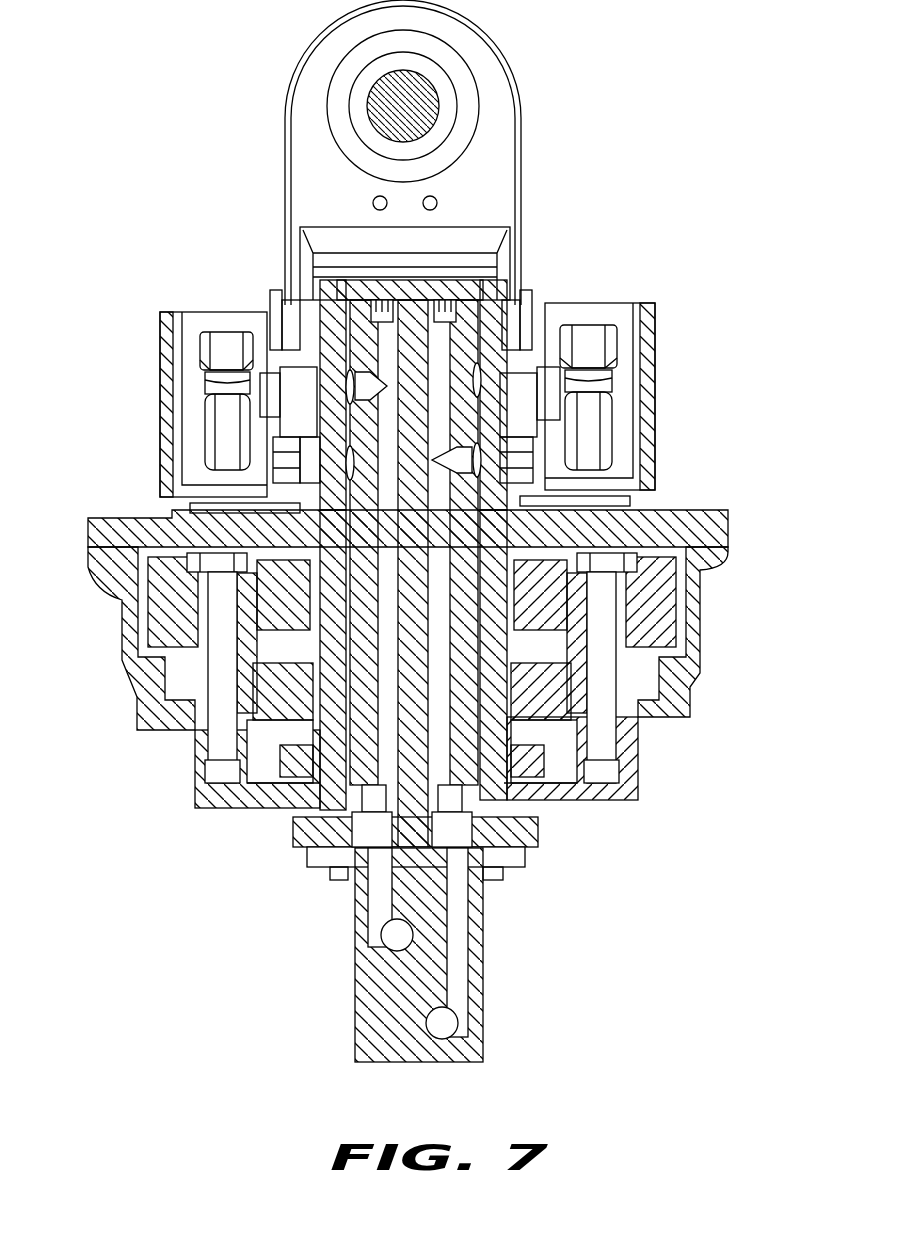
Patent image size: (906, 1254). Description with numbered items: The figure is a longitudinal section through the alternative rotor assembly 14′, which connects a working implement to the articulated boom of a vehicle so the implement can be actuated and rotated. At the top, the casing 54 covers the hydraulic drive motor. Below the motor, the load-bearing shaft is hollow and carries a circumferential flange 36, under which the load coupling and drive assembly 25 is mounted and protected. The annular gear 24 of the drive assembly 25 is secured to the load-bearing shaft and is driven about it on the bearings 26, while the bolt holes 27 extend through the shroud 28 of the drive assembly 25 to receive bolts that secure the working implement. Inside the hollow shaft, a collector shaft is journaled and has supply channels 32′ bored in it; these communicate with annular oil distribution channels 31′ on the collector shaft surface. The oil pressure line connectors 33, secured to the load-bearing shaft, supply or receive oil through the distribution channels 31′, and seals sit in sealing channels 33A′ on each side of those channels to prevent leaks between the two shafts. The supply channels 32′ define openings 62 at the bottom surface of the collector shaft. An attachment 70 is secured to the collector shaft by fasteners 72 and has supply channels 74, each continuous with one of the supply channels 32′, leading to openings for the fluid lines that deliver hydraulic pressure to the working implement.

The rotor assembly 14′ is at (557, 165).
The casing 54 is at (650, 332).
The oil pressure line connectors 33 is at (200, 420).
The annular oil distribution channels 31′ is at (293, 313).
The sealing channels 33A′ is at (490, 430).
The supply channels 32′ is at (387, 540).
The circumferential flange 36 is at (600, 540).
The bolt holes 27 is at (213, 792).
The shroud 28 is at (195, 757).
The load coupling and drive assembly 25 is at (665, 773).
The annular gear 24 is at (160, 613).
The bearings 26 is at (260, 690).
The openings 62 is at (340, 848).
The attachment 70 is at (370, 1027).
The fasteners 72 is at (335, 880).
The supply channels 74 is at (380, 932).